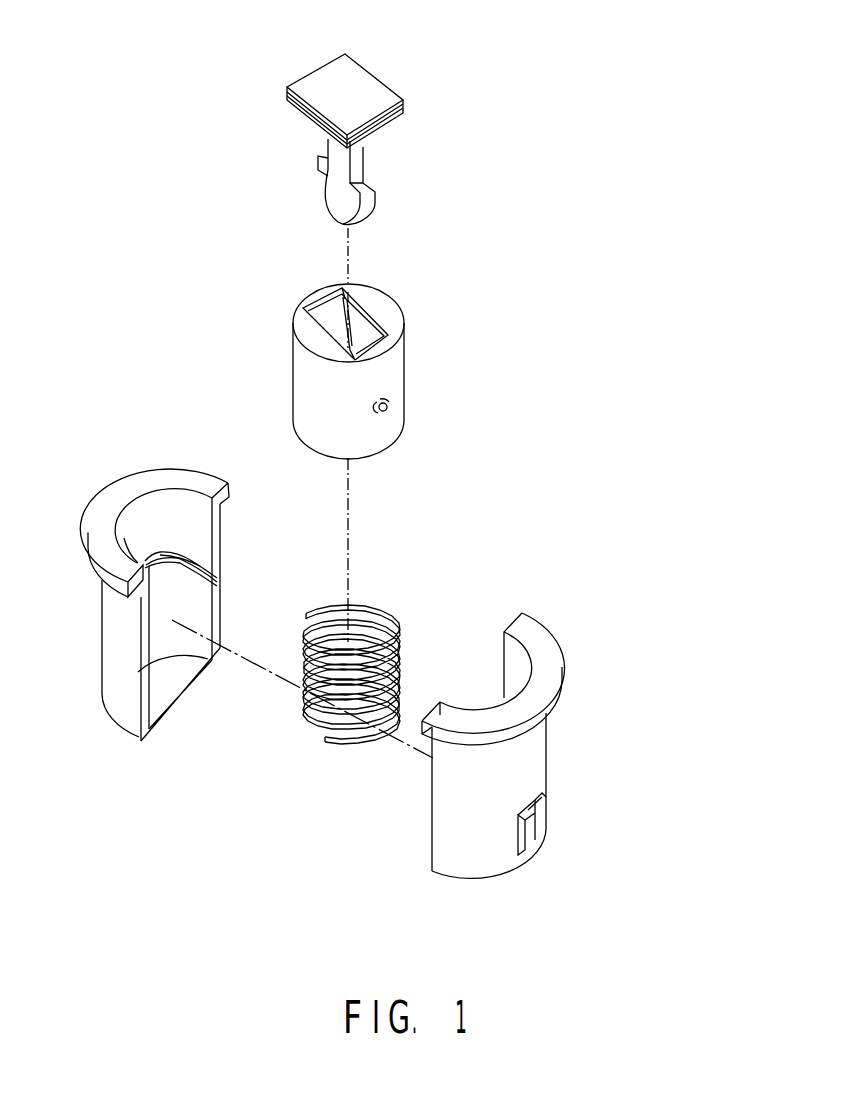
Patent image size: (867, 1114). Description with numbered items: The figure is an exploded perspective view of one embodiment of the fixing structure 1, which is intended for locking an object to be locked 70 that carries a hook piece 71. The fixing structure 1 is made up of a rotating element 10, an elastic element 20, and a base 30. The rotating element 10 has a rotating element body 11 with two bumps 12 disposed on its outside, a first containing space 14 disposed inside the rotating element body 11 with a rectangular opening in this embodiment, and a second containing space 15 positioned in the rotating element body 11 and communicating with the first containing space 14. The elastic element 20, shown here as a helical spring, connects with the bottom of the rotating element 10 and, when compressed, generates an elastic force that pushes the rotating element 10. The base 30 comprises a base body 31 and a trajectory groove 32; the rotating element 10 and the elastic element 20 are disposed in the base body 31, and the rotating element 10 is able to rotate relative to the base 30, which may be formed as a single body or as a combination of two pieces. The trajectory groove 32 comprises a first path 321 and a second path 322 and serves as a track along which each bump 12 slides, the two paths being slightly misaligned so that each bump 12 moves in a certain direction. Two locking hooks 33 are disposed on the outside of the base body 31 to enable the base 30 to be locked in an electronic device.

The fixing structure 1 is at (578, 371).
The object to be locked 70 is at (449, 83).
The hook piece 71 is at (328, 184).
The rotating element 10 is at (435, 283).
The rotating element body 11 is at (390, 383).
The bump 12 is at (390, 413).
The first containing space 14 is at (332, 328).
The second containing space 15 is at (360, 335).
The elastic element 20 is at (390, 613).
The base 30 is at (575, 623).
The base body 31 is at (535, 762).
The trajectory groove 32 is at (182, 558).
The first path 321 is at (198, 573).
The second path 322 is at (200, 580).
The locking hook 33 is at (537, 807).